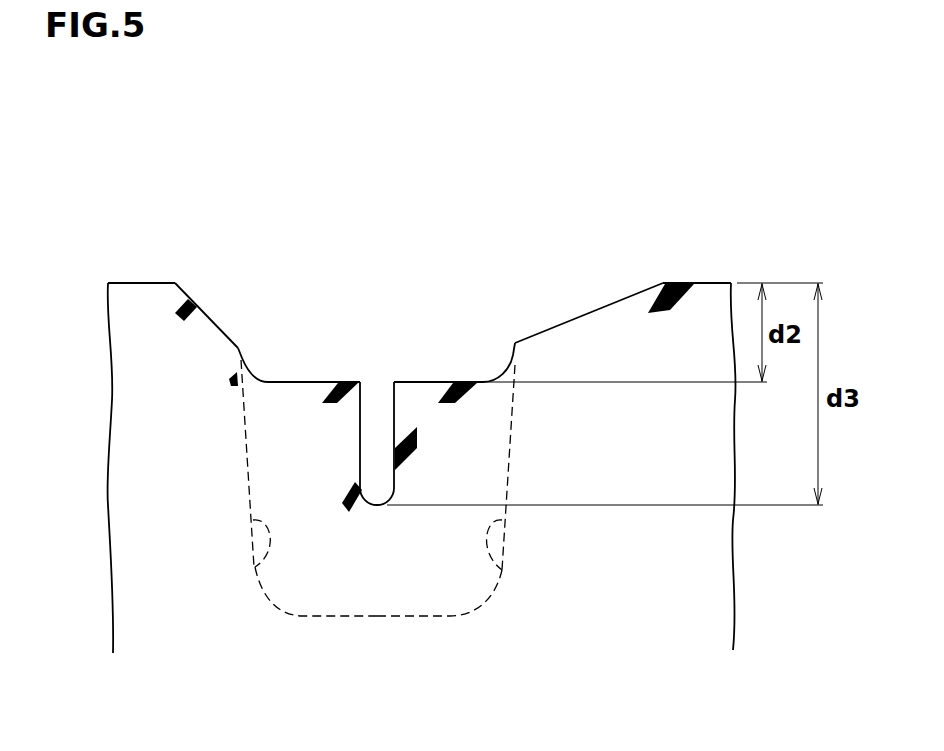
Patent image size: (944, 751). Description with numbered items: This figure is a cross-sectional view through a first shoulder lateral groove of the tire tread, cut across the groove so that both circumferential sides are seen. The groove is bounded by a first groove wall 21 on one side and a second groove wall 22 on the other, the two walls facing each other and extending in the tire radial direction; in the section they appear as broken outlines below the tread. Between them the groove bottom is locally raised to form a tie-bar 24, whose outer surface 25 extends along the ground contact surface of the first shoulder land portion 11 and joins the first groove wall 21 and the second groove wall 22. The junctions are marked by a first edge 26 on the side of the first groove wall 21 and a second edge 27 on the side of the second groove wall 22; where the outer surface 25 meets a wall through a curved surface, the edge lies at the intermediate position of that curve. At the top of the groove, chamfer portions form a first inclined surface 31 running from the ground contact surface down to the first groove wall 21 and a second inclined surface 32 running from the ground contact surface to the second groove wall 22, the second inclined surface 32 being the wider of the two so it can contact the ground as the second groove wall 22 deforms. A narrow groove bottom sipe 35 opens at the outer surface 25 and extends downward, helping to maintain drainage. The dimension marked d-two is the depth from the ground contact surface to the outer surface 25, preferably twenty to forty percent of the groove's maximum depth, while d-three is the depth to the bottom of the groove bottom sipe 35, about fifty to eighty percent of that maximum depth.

The first shoulder land portion 11 is at (709, 294).
The first groove wall 21 is at (255, 567).
The second groove wall 22 is at (502, 570).
The tie-bar 24 is at (322, 337).
The outer surface 25 is at (428, 381).
The first edge 26 is at (251, 372).
The second edge 27 is at (500, 366).
The first inclined surface 31 is at (211, 312).
The second inclined surface 32 is at (590, 309).
The groove bottom sipe 35 is at (377, 439).